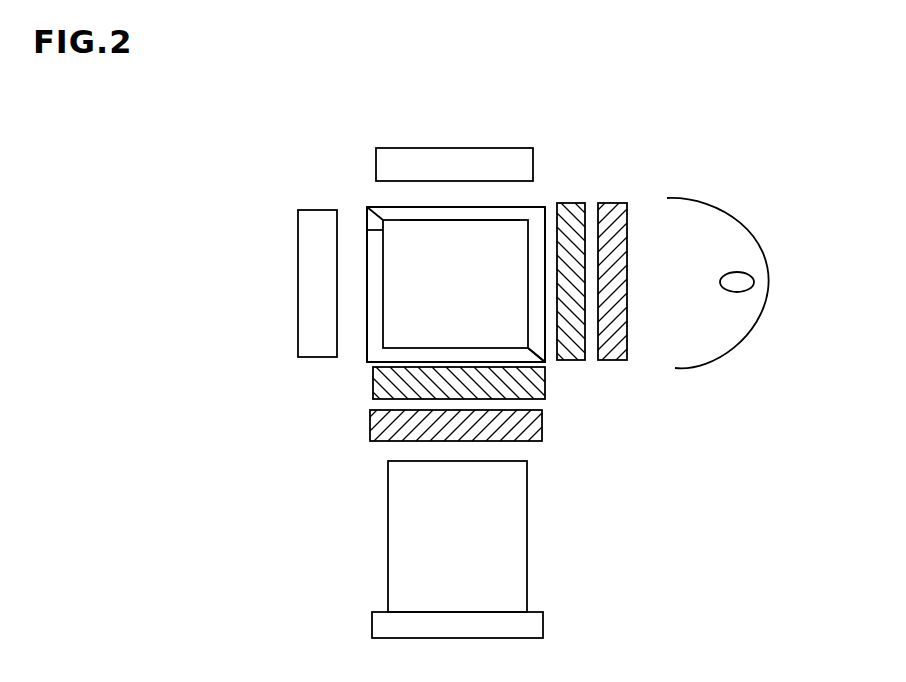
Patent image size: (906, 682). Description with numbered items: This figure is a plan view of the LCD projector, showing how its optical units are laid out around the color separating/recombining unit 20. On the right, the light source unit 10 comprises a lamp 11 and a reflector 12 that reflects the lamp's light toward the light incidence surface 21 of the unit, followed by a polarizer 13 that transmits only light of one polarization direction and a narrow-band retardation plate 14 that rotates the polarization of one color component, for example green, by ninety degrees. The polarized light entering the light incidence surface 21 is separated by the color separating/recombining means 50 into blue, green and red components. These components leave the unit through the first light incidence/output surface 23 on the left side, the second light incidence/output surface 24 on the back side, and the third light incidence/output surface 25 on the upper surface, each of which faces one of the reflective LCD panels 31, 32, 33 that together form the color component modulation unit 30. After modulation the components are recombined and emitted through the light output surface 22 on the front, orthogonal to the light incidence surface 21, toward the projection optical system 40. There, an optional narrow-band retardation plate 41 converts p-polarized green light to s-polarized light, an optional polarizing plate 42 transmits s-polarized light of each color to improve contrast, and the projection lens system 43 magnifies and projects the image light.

The light source unit 10 is at (753, 130).
The lamp 11 is at (750, 275).
The reflector 12 is at (698, 198).
The polarizer 13 is at (612, 212).
The narrow-band retardation plate 14 is at (573, 212).
The color separating/recombining unit 20 is at (364, 300).
The light incidence surface 21 is at (547, 212).
The light output surface 22 is at (473, 356).
The first light incidence/output surface 23 is at (367, 275).
The second light incidence/output surface 24 is at (513, 204).
The third light incidence/output surface 25 is at (485, 214).
The color component modulation unit 30 is at (427, 93).
The reflective LCD panel 31 is at (313, 222).
The reflective LCD panel 32 is at (408, 165).
The reflective LCD panel 33 is at (398, 229).
The projection optical system 40 is at (298, 368).
The narrow-band retardation plate 41 is at (373, 375).
The polarizing plate 42 is at (370, 420).
The projection lens system 43 is at (397, 478).
The color separating/recombining means 50 is at (547, 362).